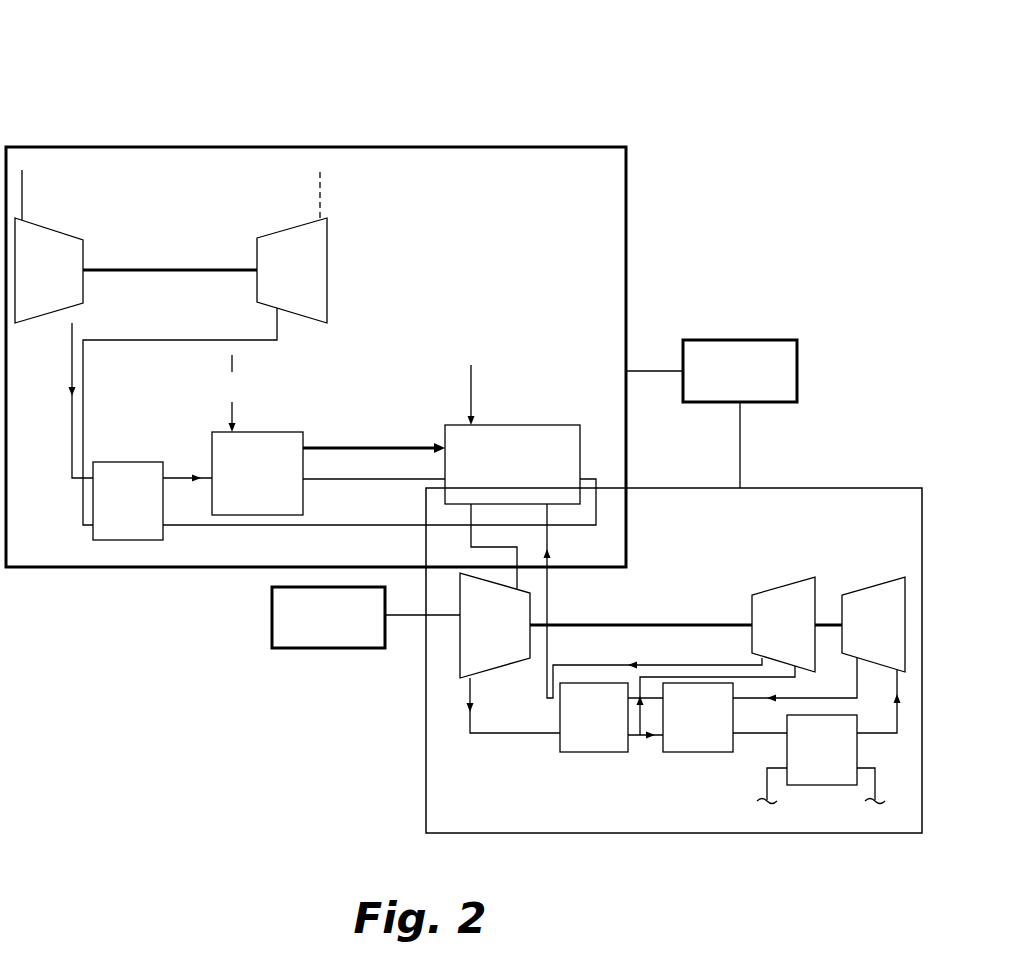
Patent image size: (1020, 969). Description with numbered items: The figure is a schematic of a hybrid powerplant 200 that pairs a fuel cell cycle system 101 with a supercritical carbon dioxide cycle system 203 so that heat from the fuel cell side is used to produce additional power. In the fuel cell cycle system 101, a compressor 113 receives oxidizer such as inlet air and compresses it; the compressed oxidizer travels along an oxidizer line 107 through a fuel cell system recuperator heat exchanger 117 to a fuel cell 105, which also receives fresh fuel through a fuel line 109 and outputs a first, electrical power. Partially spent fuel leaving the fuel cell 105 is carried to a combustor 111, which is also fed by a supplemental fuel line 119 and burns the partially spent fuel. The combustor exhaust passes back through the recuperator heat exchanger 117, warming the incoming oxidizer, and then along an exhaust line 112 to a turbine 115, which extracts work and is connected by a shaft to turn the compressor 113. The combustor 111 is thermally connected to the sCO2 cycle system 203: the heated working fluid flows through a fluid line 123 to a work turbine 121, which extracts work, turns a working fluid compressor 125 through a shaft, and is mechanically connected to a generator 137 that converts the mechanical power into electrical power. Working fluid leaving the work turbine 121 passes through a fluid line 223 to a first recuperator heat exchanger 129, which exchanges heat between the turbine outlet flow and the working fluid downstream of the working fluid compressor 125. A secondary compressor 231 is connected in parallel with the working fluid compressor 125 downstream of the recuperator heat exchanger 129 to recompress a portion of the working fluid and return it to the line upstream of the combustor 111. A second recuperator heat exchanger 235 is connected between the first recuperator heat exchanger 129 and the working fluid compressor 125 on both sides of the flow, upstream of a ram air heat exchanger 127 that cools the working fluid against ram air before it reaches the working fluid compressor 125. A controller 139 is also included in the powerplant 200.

The powerplant 200 is at (90, 85).
The fuel cell cycle system 101 is at (452, 204).
The compressor 113 is at (33, 225).
The turbine 115 is at (296, 227).
The exhaust line 112 is at (228, 339).
The oxidizer line 107 is at (70, 326).
The fuel line 109 is at (227, 369).
The fuel cell 105 is at (209, 448).
The fuel cell system recuperator heat exchanger 117 is at (112, 541).
The supplemental fuel line 119 is at (473, 380).
The combustor 111 is at (538, 425).
The controller 139 is at (722, 382).
The fluid line 123 is at (468, 512).
The sCO2 cycle system 203 is at (759, 528).
The generator 137 is at (310, 628).
The work turbine 121 is at (487, 676).
The secondary compressor 231 is at (788, 584).
The working fluid compressor 125 is at (878, 584).
The fluid line 223 is at (493, 735).
The first recuperator heat exchanger 129 is at (575, 753).
The second recuperator heat exchanger 235 is at (678, 753).
The ram air heat exchanger 127 is at (812, 786).